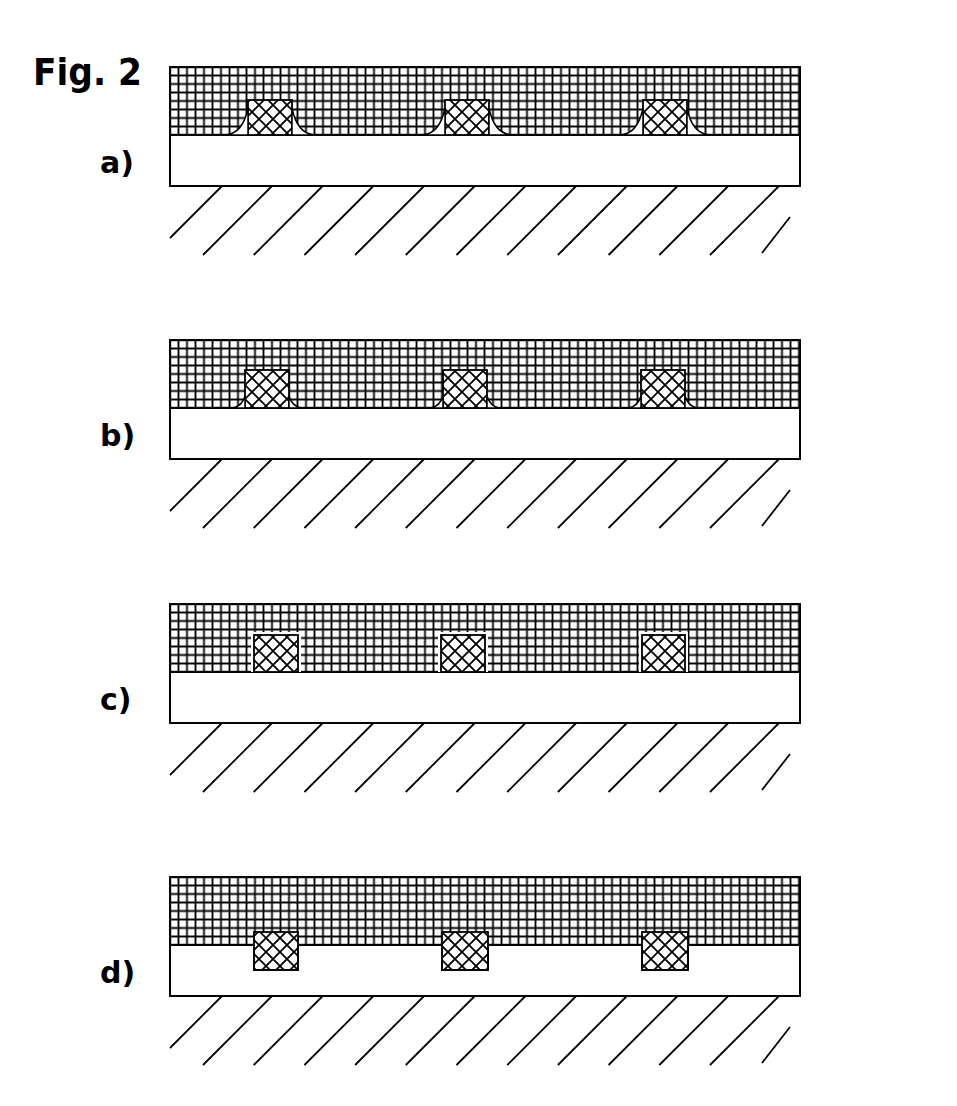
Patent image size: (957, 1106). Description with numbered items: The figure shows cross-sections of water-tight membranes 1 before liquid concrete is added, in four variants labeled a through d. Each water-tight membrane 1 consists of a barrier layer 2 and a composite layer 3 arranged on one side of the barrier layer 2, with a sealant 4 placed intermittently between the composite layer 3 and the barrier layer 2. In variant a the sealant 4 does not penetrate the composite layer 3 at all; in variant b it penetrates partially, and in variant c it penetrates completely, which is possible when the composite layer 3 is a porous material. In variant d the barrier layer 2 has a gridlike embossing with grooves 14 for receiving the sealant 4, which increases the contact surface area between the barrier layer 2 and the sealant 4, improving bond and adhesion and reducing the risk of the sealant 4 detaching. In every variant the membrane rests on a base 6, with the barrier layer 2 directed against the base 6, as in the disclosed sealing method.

The water-tight membrane 1 is at (515, 531).
The barrier layer 2 is at (515, 565).
The composite layer 3 is at (515, 490).
The sealant 4 is at (467, 494).
The base 6 is at (515, 625).
The grooves 14 is at (642, 947).